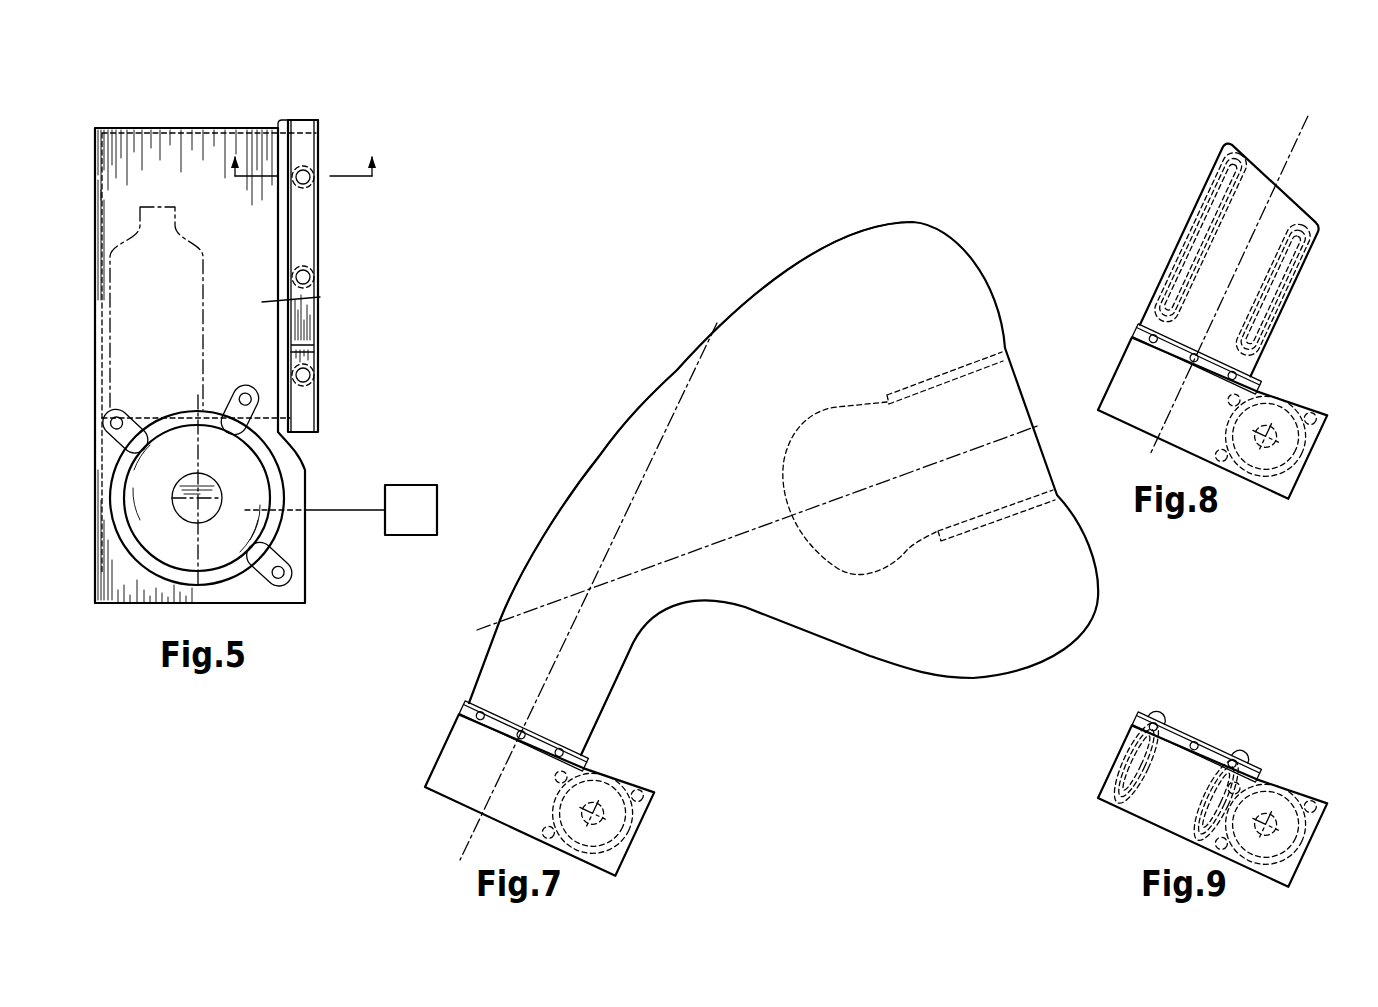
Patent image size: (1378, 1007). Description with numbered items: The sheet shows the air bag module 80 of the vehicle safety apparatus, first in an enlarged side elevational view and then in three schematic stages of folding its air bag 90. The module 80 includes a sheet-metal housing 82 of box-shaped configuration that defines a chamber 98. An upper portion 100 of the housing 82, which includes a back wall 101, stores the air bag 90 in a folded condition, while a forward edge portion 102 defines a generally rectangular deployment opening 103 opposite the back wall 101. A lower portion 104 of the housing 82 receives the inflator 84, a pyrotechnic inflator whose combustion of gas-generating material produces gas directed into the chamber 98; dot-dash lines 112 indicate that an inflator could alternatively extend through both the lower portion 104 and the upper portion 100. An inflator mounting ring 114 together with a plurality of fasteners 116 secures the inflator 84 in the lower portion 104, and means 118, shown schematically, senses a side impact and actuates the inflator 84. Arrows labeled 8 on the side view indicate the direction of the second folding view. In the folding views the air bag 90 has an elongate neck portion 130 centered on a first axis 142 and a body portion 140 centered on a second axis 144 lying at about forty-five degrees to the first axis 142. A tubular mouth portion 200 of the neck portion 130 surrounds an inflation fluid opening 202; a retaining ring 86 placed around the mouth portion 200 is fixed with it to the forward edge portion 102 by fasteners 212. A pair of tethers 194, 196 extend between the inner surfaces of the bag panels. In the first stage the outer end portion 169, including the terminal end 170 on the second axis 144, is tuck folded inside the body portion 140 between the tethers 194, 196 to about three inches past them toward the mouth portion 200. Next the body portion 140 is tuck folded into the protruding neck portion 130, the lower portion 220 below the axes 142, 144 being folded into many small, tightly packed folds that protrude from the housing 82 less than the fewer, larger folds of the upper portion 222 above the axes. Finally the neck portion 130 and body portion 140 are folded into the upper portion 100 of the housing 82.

In FIG. 5, the section line 8- 8 is at (300, 158).
In FIG. 5, the air bag module 80 is at (402, 305).
In FIG. 7, the air bag module 80 is at (725, 745).
In FIG. 8, the air bag module 80 is at (1310, 380).
In FIG. 9, the air bag module 80 is at (1277, 735).
In FIG. 5, the housing 82 is at (95, 315).
In FIG. 7, the housing 82 is at (645, 822).
In FIG. 8, the housing 82 is at (1303, 480).
In FIG. 9, the housing 82 is at (1300, 858).
In FIG. 5, the inflator 84 is at (247, 490).
In FIG. 5, the retaining ring 86 is at (322, 145).
In FIG. 7, the retaining ring 86 is at (578, 752).
In FIG. 8, the retaining ring 86 is at (1255, 370).
In FIG. 9, the retaining ring 86 is at (1190, 728).
In FIG. 5, the air bag 90 is at (322, 245).
In FIG. 7, the air bag 90 is at (890, 222).
In FIG. 8, the air bag 90 is at (1200, 150).
In FIG. 9, the air bag 90 is at (1152, 700).
In FIG. 5, the chamber 98 is at (193, 173).
In FIG. 5, the upper portion 100 is at (135, 180).
In FIG. 8, the upper portion 100 is at (1130, 352).
In FIG. 9, the upper portion 100 is at (1105, 770).
In FIG. 5, the back wall 101 is at (95, 268).
In FIG. 5, the forward edge portion 102 is at (320, 300).
In FIG. 5, the deployment opening 103 is at (323, 207).
In FIG. 5, the lower portion 104 is at (95, 483).
In FIG. 5, the inflator 112 is at (205, 292).
In FIG. 5, the inflator mounting ring 114 is at (275, 528).
In FIG. 5, the fasteners 116 is at (110, 421).
In FIG. 5, the means for sensing a side impact 118 is at (405, 497).
In FIG. 7, the neck portion 130 is at (490, 622).
In FIG. 8, the neck portion 130 is at (1168, 260).
In FIG. 7, the body portion 140 is at (762, 272).
In FIG. 8, the body portion 140 is at (1293, 192).
In FIG. 7, the first axis 142 is at (677, 370).
In FIG. 8, the first axis 142 is at (1290, 148).
In FIG. 7, the second axis 144 is at (973, 447).
In FIG. 7, the outer end portion 169 is at (777, 447).
In FIG. 7, the terminal end 170 is at (797, 530).
In FIG. 7, the tether 194 is at (935, 372).
In FIG. 7, the tether 196 is at (977, 532).
In FIG. 7, the mouth portion 200 is at (475, 677).
In FIG. 8, the mouth portion 200 is at (1145, 310).
In FIG. 5, the inflation fluid opening 202 is at (322, 352).
In FIG. 5, the fasteners 212 is at (297, 178).
In FIG. 7, the lower portion 220 is at (692, 633).
In FIG. 8, the lower portion 220 is at (1300, 293).
In FIG. 9, the lower portion 220 is at (1203, 780).
In FIG. 7, the upper portion 222 is at (633, 378).
In FIG. 8, the upper portion 222 is at (1178, 222).
In FIG. 9, the upper portion 222 is at (1137, 752).